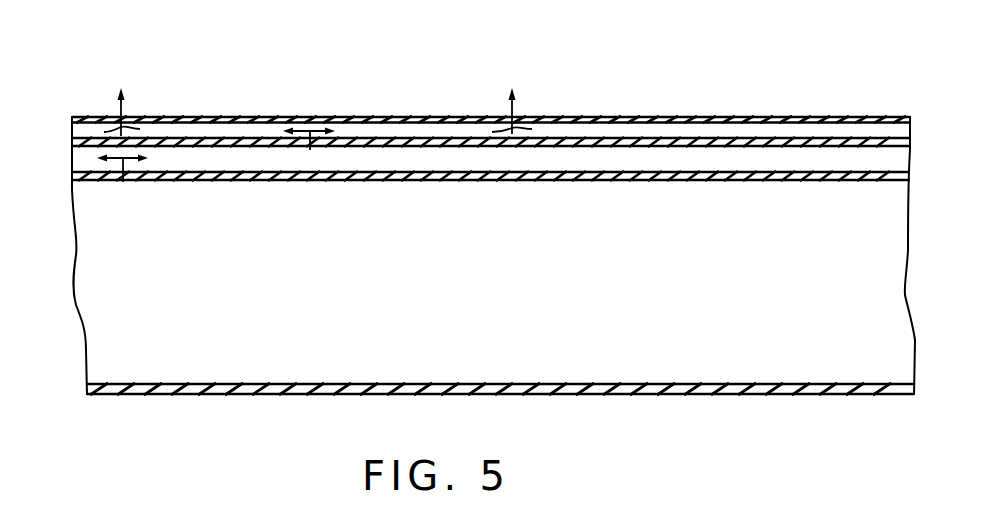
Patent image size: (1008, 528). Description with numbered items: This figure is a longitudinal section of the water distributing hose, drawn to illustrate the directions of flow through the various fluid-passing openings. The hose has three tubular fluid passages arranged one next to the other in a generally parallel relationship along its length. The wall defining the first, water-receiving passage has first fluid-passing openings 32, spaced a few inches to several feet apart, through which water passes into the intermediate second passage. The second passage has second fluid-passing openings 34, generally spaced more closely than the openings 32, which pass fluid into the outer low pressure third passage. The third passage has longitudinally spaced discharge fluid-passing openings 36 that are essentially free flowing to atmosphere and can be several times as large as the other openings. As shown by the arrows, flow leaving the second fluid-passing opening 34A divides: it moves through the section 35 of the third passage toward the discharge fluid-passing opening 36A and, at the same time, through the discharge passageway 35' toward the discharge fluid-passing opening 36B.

The first fluid-passing openings 32 is at (123, 182).
The second fluid-passing openings 34 is at (680, 138).
The second fluid-passing opening 34A is at (310, 150).
The section of third fluid passage 35 is at (491, 93).
The discharge passageway 35' is at (491, 98).
The discharge fluid-passing openings 36 is at (870, 120).
The discharge fluid-passing opening 36A is at (515, 120).
The discharge fluid-passing opening 36B is at (117, 118).